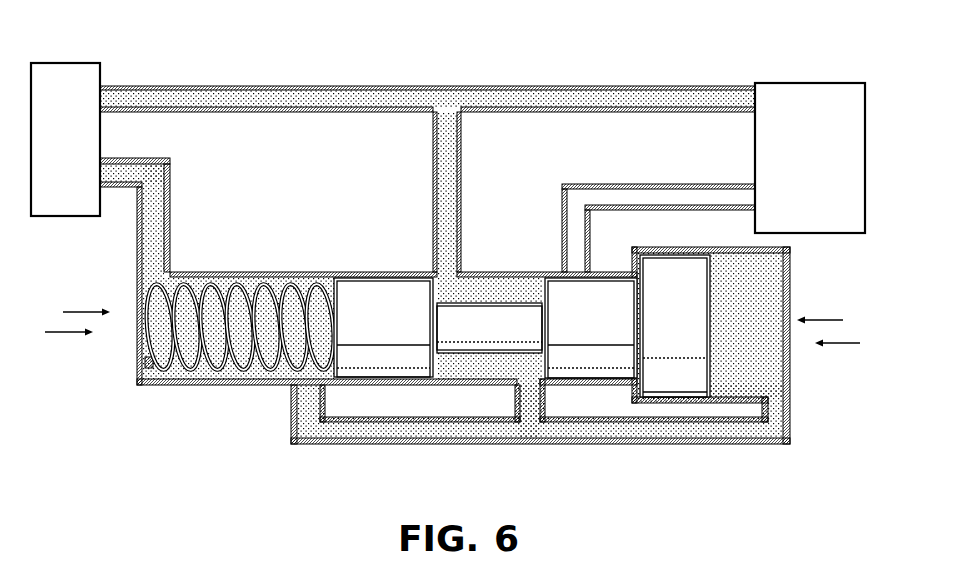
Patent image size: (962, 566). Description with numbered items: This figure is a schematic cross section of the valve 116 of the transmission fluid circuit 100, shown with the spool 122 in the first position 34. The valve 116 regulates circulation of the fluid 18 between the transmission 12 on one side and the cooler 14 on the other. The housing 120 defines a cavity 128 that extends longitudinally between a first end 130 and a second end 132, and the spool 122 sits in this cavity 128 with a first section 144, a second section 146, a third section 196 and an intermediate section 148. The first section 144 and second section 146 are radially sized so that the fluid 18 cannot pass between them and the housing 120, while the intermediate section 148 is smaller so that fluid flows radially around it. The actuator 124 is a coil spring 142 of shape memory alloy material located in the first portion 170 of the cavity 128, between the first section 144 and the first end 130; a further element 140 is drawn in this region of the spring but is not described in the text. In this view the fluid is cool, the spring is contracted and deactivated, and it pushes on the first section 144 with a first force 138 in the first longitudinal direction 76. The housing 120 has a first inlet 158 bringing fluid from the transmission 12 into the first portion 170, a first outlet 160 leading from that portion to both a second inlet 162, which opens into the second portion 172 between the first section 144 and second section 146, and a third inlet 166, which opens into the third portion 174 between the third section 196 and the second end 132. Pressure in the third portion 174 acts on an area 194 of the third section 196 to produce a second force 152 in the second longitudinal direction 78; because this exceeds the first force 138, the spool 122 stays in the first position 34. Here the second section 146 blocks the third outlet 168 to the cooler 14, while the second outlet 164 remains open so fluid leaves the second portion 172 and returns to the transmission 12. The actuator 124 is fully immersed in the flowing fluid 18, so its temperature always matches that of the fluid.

The transmission fluid circuit 100 is at (82, 40).
The transmission 12 is at (52, 149).
The cooler 14 is at (800, 165).
The fluid 18 is at (215, 100).
The valve 116 is at (272, 256).
The second outlet 164 is at (449, 257).
The third outlet 168 is at (578, 260).
The first inlet 158 is at (150, 249).
The coil spring 142 is at (237, 277).
The first force 138 is at (83, 310).
The first longitudinal direction 76 is at (55, 330).
The first end 130 is at (138, 338).
The actuator 124 is at (138, 360).
The housing 120 is at (155, 385).
The spring 140 is at (205, 330).
The first portion 170 is at (232, 370).
The first outlet 160 is at (305, 396).
The first position 34 is at (317, 459).
The spool 122 is at (392, 372).
The second portion 172 is at (460, 370).
The cavity 128 is at (480, 370).
The second inlet 162 is at (533, 413).
The third inlet 166 is at (776, 411).
The third portion 174 is at (778, 386).
The second end 132 is at (792, 360).
The second force 152 is at (826, 320).
The second longitudinal direction 78 is at (850, 343).
The area 194 is at (712, 279).
The third section 196 is at (661, 334).
The first section 144 is at (369, 334).
The intermediate section 148 is at (463, 334).
The second section 146 is at (576, 334).